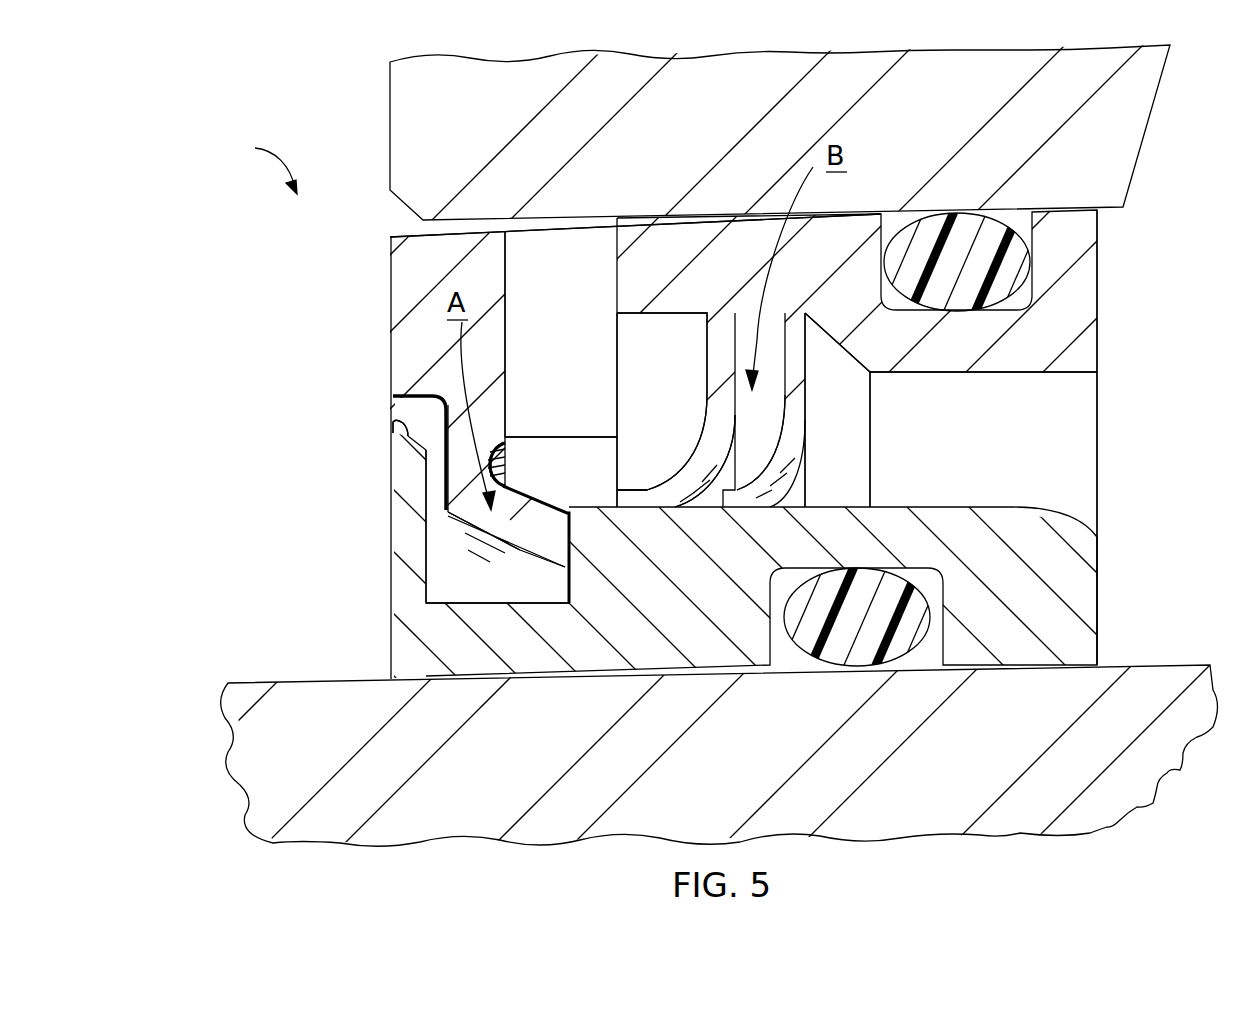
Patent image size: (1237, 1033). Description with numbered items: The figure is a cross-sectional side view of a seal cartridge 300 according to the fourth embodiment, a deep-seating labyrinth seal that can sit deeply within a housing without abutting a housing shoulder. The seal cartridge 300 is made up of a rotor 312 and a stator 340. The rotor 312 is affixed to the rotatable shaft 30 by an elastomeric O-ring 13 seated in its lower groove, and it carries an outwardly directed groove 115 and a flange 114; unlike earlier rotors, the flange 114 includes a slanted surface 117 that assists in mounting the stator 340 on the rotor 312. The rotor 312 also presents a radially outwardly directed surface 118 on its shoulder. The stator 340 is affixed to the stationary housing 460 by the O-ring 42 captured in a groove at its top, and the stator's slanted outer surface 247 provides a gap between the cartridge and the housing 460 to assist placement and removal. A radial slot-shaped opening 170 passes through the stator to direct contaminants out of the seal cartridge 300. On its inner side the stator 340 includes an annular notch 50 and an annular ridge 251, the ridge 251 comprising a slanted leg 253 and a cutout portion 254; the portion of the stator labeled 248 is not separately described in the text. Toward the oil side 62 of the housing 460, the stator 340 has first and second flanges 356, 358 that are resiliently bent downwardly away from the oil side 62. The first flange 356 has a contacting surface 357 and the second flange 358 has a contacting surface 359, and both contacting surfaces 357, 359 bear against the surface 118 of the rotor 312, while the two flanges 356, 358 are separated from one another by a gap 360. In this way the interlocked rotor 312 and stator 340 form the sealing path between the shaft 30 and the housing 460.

The seal cartridge 300 is at (247, 158).
The stationary housing 460 is at (1120, 118).
The rotatable shaft 30 is at (1160, 752).
The stator 340 is at (1080, 312).
The O-ring 42 is at (1015, 262).
The oil side 62 is at (1195, 445).
The rotor 312 is at (1082, 590).
The elastomeric O-ring 13 is at (898, 645).
The seal body 248 is at (390, 330).
The slanted outer surface 247 is at (430, 226).
The radial slot-shaped opening 170 is at (586, 288).
The annular notch 50 is at (407, 405).
The slanted surface 117 is at (393, 415).
The cutout portion 254 is at (515, 473).
The annular ridge 251 is at (467, 473).
The flange 114 is at (405, 532).
The slanted leg 253 is at (527, 527).
The outwardly directed groove 115 is at (462, 583).
The contacting surface 359 is at (698, 505).
The first flange 356 is at (787, 458).
The contacting surface 357 is at (790, 508).
The second flange 358 is at (647, 498).
The gap 360 is at (697, 495).
The radially outwardly directed surface 118 is at (903, 500).